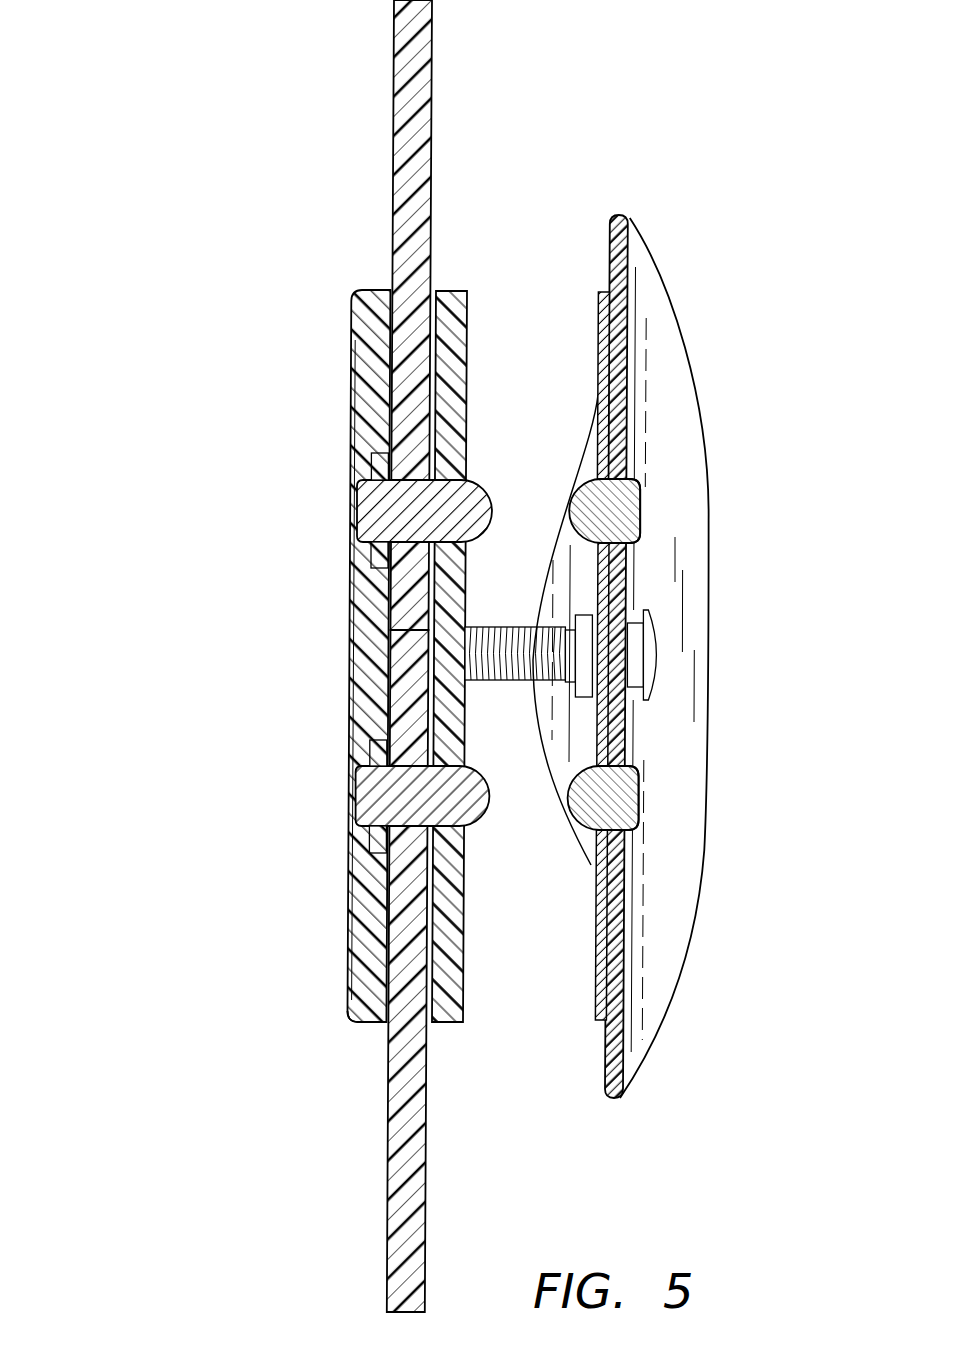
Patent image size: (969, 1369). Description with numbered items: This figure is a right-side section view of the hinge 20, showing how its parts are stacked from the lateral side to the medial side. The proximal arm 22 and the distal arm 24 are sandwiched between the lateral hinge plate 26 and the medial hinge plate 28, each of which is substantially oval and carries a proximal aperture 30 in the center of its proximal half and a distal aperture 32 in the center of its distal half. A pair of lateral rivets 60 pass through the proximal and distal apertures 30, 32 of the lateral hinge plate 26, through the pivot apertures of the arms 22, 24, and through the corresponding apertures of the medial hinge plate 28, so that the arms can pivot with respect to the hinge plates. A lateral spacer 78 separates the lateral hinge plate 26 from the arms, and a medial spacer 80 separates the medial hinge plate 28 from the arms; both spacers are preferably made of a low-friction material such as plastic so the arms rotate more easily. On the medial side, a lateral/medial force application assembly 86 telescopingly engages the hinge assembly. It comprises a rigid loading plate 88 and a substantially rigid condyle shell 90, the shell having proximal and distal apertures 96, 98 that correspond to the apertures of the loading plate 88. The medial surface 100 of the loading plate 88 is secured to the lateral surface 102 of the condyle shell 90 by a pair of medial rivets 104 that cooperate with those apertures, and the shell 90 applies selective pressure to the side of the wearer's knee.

The hinge 20 is at (429, 656).
The proximal arm 22 is at (416, 48).
The distal arm 24 is at (400, 1264).
The lateral hinge plate 26 is at (372, 302).
The medial hinge plate 28 is at (452, 292).
The proximal aperture 30 is at (362, 498).
The distal aperture 32 is at (358, 783).
The lateral rivets 60 is at (375, 517).
The lateral spacer 78 is at (383, 1024).
The medial spacer 80 is at (432, 1024).
The lateral/medial force application assembly 86 is at (633, 707).
The loading plate 88 is at (600, 945).
The condyle shell 90 is at (650, 302).
The proximal aperture of condyle shell 96 is at (645, 503).
The distal aperture of condyle shell 98 is at (639, 788).
The medial surface of loading plate 100 is at (622, 350).
The lateral surface of condyle shell 102 is at (601, 316).
The medial rivets 104 is at (640, 514).